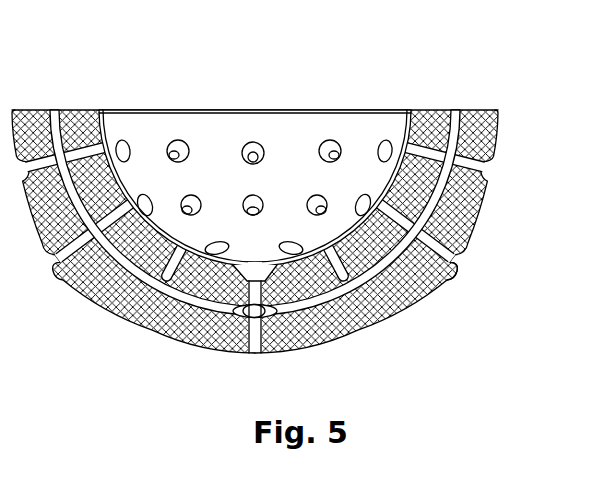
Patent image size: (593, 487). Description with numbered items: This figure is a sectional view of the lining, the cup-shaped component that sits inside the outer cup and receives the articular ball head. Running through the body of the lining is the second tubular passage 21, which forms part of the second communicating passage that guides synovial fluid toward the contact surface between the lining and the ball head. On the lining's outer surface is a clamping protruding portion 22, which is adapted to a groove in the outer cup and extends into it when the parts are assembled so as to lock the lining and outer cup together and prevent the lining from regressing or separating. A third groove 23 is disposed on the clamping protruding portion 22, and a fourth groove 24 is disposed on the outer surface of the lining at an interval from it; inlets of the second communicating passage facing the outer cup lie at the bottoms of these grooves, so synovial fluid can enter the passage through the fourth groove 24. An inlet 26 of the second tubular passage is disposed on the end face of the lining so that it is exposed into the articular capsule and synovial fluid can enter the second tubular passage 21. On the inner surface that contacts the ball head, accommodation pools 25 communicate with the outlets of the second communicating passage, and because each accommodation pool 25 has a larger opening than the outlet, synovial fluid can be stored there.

The second tubular passage 21 is at (120, 262).
The clamping protruding portion 22 is at (466, 253).
The third groove 23 is at (458, 266).
The fourth groove 24 is at (485, 173).
The accommodation pool 25 is at (248, 145).
The inlet of the second tubular passage 26 is at (53, 109).